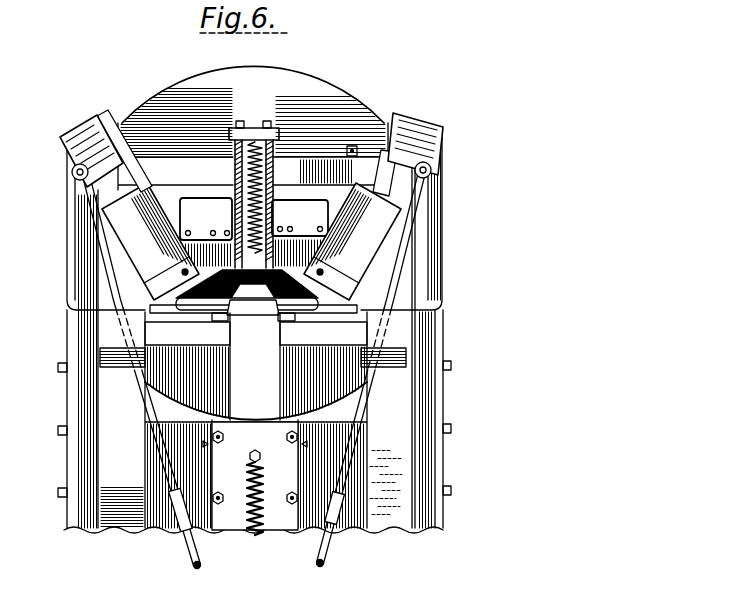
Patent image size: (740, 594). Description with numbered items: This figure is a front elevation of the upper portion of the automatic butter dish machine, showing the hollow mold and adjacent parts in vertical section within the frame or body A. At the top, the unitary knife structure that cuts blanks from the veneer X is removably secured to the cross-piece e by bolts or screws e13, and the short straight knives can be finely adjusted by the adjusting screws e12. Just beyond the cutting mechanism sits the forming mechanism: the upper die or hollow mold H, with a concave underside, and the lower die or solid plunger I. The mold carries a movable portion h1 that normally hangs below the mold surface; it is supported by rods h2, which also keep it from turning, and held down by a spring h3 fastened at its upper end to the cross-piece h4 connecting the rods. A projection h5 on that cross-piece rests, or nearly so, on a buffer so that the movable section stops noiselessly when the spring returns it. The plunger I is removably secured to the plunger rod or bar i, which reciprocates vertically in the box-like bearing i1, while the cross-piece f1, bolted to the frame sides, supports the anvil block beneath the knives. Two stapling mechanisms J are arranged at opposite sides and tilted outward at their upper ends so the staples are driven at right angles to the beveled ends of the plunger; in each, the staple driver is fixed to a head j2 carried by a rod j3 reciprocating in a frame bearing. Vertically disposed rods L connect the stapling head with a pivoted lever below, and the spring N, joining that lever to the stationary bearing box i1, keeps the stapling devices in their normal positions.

The cross-piece e is at (262, 80).
The bolts or screws e13 is at (355, 147).
The adjusting screws e12 is at (318, 229).
The cross-piece h4 is at (236, 160).
The spring h3 is at (268, 182).
The projection h5 is at (236, 162).
The rods h2 is at (270, 182).
The movable portion of the mold h1 is at (251, 277).
The upper die or hollow mold H is at (204, 262).
The lower die or solid plunger I is at (380, 278).
The veneer X is at (383, 258).
The cross-piece f1 is at (382, 322).
The plunger rod or bar i is at (255, 366).
The box-like bearing i1 is at (238, 520).
The spring N is at (256, 525).
The main frame A is at (115, 442).
The stapling mechanisms J is at (128, 232).
The head j2 is at (458, 112).
The rod j3 is at (476, 168).
The vertically disposed rods L is at (183, 542).